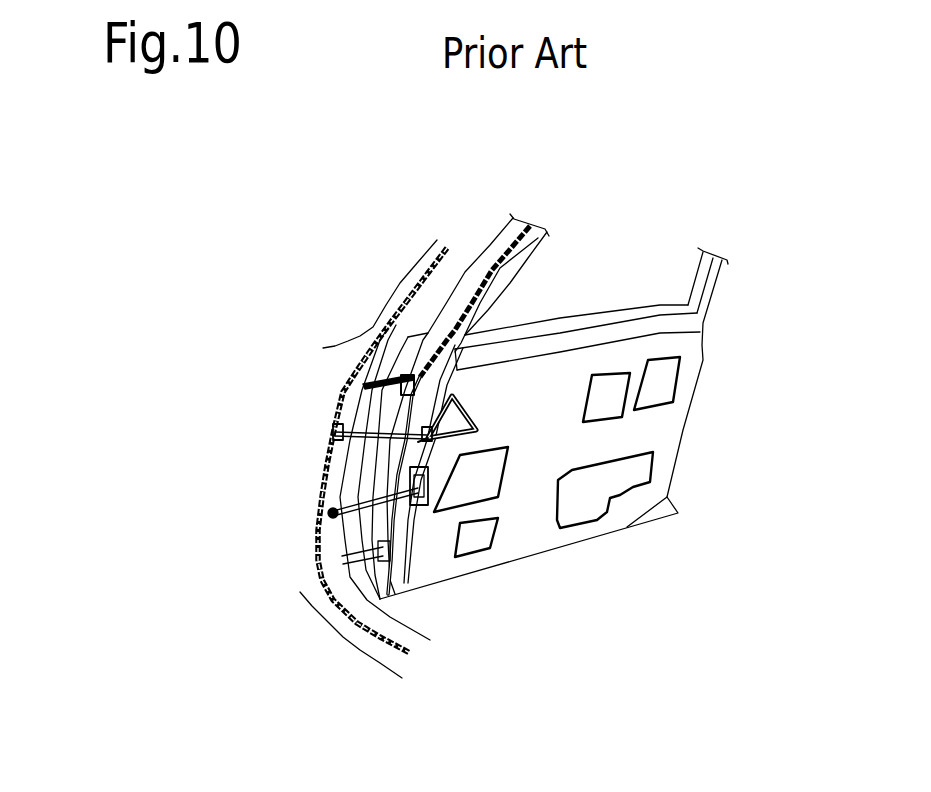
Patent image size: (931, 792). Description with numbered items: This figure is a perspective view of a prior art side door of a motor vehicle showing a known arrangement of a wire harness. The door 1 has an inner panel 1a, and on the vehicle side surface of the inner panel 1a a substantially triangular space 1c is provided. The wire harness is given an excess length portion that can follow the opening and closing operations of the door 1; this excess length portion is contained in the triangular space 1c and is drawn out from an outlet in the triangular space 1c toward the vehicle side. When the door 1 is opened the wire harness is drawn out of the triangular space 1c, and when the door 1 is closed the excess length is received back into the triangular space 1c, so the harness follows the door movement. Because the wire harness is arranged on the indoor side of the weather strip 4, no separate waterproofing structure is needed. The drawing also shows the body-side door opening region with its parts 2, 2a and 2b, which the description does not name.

The door 1 is at (708, 367).
The inner panel 1a is at (538, 543).
The triangular space 1c is at (460, 416).
The vehicle body 2 is at (341, 459).
The door opening flange 2a is at (388, 628).
The door opening weatherstrip 2b is at (323, 455).
The weather strip 4 is at (467, 297).